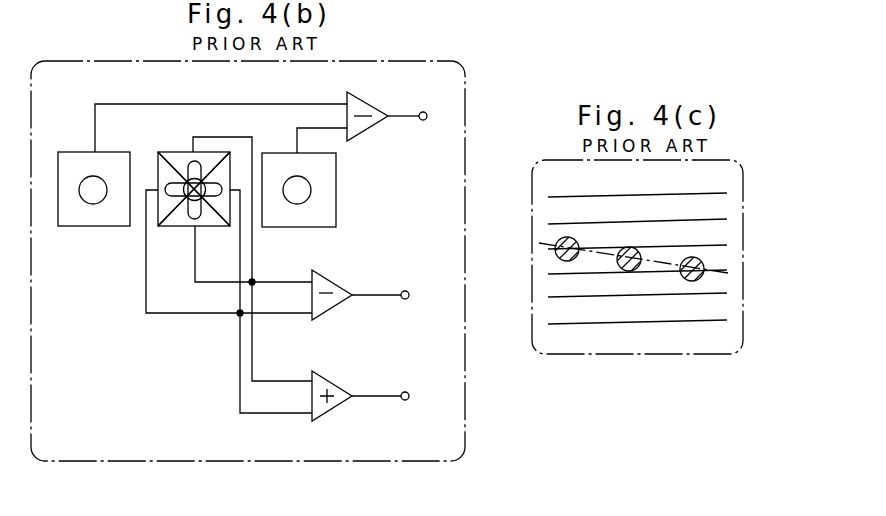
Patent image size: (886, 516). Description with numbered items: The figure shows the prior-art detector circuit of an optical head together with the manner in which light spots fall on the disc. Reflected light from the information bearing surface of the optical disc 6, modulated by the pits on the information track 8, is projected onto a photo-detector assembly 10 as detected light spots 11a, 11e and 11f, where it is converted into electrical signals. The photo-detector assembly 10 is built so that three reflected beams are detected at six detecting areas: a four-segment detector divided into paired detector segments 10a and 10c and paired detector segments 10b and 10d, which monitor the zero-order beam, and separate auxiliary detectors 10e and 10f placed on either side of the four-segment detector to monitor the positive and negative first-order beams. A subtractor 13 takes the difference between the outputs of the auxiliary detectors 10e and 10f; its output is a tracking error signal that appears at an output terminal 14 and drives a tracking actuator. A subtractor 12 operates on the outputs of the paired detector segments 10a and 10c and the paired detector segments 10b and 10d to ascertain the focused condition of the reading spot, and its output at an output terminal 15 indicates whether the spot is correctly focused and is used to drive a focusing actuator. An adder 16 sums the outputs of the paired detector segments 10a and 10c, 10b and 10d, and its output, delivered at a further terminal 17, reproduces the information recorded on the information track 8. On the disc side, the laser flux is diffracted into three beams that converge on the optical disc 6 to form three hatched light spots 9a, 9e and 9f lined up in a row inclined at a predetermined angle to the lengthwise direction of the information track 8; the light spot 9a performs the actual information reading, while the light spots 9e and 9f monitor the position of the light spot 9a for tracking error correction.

In FIG. 4C, the optical disc 6 is at (725, 354).
In FIG. 4C, the information track 8 is at (732, 303).
In FIG. 4C, the light spot 9a is at (623, 272).
In FIG. 4C, the light spot 9e is at (682, 281).
In FIG. 4C, the light spot 9f is at (558, 257).
In FIG. 4B, the photo-detector assembly 10 is at (392, 462).
In FIG. 4B, the detector segment 10a is at (162, 168).
In FIG. 4B, the detector segment 10b is at (178, 158).
In FIG. 4B, the detector segment 10c is at (226, 173).
In FIG. 4B, the detector segment 10d is at (173, 220).
In FIG. 4B, the auxiliary detector 10e is at (68, 217).
In FIG. 4B, the auxiliary detector 10f is at (327, 218).
In FIG. 4B, the detected light spot 11a is at (213, 194).
In FIG. 4B, the detected light spot 11e is at (100, 198).
In FIG. 4B, the detected light spot 11f is at (311, 188).
In FIG. 4B, the subtractor 12 is at (327, 311).
In FIG. 4B, the subtractor 13 is at (368, 99).
In FIG. 4B, the output terminal 14 is at (422, 120).
In FIG. 4B, the output terminal 15 is at (405, 299).
In FIG. 4B, the adder 16 is at (327, 412).
In FIG. 4B, the output terminal 17 is at (407, 400).